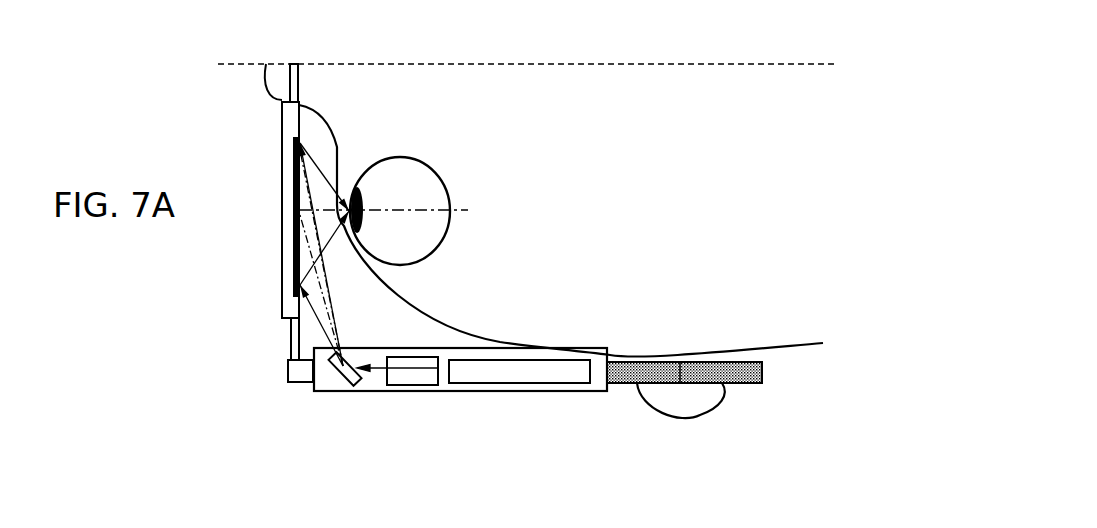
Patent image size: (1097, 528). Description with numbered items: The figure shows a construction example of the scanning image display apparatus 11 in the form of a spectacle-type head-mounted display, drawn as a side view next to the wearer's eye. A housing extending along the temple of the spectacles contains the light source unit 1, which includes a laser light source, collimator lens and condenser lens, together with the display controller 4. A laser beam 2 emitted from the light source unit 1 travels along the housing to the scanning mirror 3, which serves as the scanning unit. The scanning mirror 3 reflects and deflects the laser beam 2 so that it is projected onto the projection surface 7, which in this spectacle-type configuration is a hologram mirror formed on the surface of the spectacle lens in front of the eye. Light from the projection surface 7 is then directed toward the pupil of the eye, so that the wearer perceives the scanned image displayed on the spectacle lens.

The light source unit 1 is at (418, 386).
The laser beam 2 is at (372, 371).
The scanning mirror 3 is at (333, 382).
The display controller 4 is at (557, 384).
The projection surface 7 is at (292, 278).
The scanning image display apparatus 11 is at (505, 392).